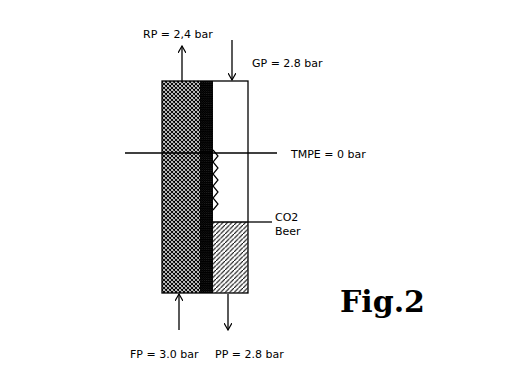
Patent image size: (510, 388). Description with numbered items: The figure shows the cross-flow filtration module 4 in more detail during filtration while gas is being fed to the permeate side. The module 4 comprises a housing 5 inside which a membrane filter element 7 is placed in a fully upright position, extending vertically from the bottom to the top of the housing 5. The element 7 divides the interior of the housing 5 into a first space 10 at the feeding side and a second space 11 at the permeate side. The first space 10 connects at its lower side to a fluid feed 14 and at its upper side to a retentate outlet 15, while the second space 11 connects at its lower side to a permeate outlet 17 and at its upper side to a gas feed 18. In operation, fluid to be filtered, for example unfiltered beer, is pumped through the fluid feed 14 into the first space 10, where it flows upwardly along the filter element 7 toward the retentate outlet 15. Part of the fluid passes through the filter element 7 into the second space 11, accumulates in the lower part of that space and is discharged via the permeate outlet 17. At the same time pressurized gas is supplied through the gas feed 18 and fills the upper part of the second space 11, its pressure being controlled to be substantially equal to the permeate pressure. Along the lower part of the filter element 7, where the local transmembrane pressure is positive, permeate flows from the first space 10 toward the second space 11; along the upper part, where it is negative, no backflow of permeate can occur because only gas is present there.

The cross-flow filtration module 4 is at (94, 122).
The housing 5 is at (162, 204).
The membrane filter element 7 is at (212, 128).
The first space at feeding side 10 is at (162, 256).
The second space at permeate side 11 is at (236, 192).
The fluid feed 14 is at (162, 312).
The retentate outlet 15 is at (166, 64).
The permeate outlet 17 is at (246, 312).
The gas feed 18 is at (218, 61).